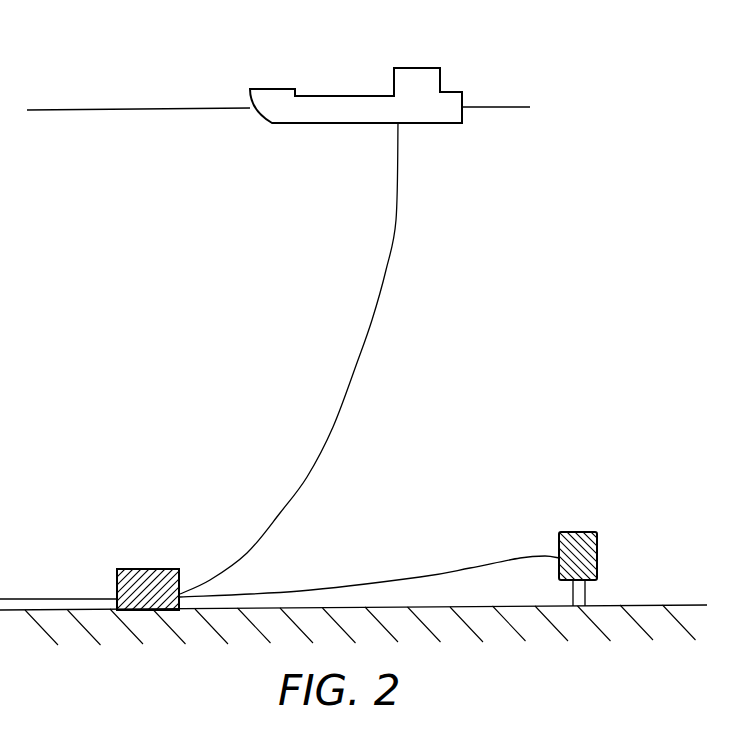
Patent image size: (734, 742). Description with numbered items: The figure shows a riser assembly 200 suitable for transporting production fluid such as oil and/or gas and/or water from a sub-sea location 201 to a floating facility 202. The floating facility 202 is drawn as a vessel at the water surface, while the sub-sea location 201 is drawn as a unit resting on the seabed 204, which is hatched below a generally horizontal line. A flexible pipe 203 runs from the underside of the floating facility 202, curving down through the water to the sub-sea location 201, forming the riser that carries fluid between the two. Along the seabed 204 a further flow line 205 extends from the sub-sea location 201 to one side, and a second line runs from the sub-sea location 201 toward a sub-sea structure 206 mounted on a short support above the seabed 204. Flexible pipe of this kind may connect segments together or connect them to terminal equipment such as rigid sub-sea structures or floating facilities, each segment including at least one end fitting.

The riser assembly 200 is at (485, 235).
The sub-sea location 201 is at (146, 568).
The floating facility 202 is at (270, 88).
The cable 203 is at (333, 427).
The seabed 204 is at (658, 606).
The seabed cable 205 is at (43, 599).
The seabed device 206 is at (510, 558).